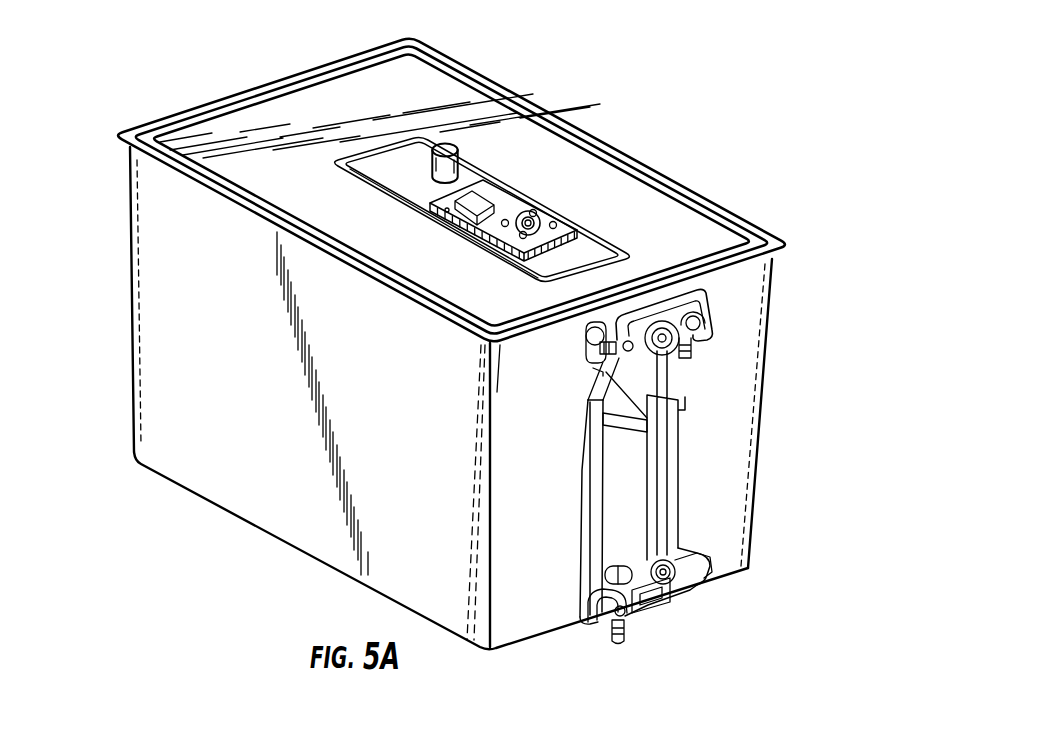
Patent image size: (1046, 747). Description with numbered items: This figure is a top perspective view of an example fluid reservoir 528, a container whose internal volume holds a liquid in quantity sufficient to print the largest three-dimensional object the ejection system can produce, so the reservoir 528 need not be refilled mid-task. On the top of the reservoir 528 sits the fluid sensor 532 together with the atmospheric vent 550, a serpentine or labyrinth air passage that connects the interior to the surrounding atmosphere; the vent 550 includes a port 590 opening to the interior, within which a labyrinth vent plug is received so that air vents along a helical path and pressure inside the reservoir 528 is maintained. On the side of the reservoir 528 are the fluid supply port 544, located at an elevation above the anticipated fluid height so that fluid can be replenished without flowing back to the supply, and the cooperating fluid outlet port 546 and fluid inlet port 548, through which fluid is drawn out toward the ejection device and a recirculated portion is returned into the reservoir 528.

The fluid reservoir 528 is at (627, 117).
The atmospheric vent 550 is at (428, 160).
The port 590 is at (458, 152).
The fluid sensor 532 is at (523, 210).
The fluid supply port 544 is at (677, 357).
The fluid inlet port 548 is at (695, 592).
The fluid outlet port 546 is at (624, 612).